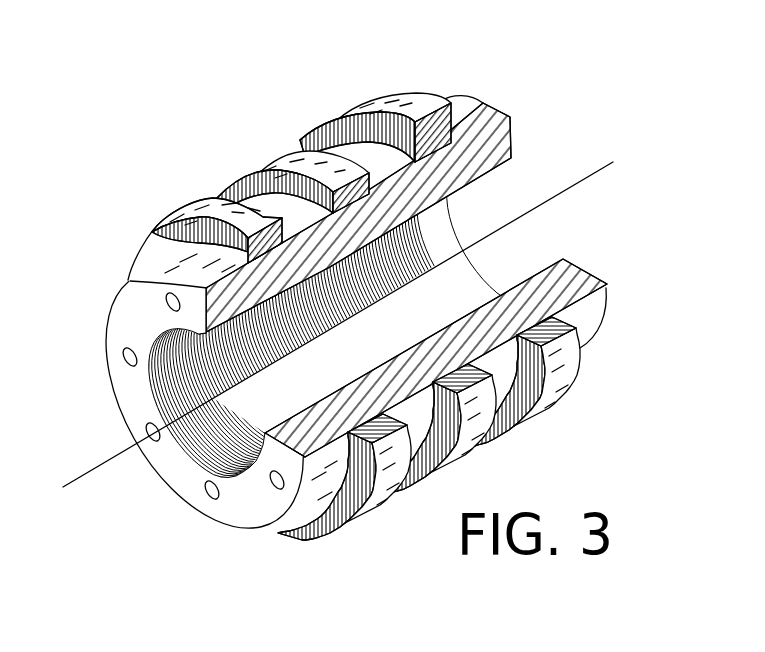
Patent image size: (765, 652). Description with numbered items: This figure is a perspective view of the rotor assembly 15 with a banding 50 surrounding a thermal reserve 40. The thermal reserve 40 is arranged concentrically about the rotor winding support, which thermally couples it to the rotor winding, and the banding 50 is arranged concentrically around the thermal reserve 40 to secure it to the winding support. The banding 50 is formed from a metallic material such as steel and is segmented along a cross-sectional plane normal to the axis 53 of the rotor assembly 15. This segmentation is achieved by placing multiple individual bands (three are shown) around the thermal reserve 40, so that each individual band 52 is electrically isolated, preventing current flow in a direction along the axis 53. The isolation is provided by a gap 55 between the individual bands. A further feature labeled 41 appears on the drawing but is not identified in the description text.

The rotor assembly 15 is at (346, 326).
The thermal reserve 40 is at (171, 438).
The flange hole 41 is at (213, 500).
The banding 50 is at (388, 103).
The individual band 52 is at (461, 125).
The axis 53 is at (584, 181).
The gap 55 is at (262, 188).